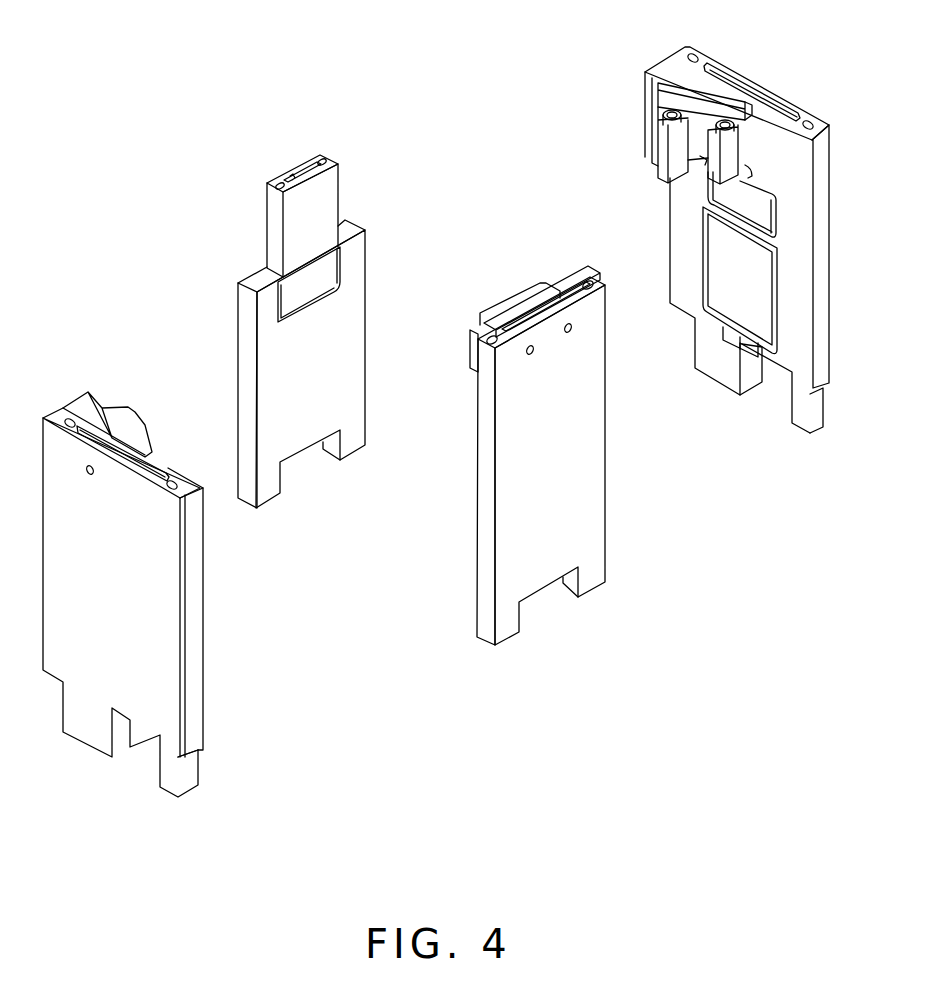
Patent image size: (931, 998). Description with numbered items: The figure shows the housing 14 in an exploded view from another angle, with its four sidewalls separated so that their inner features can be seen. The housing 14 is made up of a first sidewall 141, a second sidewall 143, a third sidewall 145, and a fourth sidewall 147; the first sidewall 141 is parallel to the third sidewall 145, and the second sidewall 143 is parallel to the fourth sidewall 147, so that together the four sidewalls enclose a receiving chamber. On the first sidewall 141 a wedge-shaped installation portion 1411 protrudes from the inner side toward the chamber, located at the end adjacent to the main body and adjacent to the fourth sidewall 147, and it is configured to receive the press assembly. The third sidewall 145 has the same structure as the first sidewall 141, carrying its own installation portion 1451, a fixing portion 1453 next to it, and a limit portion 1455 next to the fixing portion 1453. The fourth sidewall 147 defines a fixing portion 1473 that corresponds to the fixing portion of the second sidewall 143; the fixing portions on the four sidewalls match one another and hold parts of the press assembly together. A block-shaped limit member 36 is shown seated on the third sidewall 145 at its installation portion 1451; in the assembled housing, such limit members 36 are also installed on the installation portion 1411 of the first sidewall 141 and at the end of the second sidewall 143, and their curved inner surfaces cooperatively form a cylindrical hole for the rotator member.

The housing 14 is at (343, 189).
The first sidewall 141 is at (148, 613).
The installation portion 1411 is at (88, 413).
The second sidewall 143 is at (566, 467).
The third sidewall 145 is at (785, 147).
The installation portion 1451 is at (683, 68).
The fixing portion 1453 is at (735, 193).
The limit portion 1455 is at (735, 281).
The fourth sidewall 147 is at (275, 372).
The fixing portion 1473 is at (308, 275).
The limit member 36 is at (673, 154).